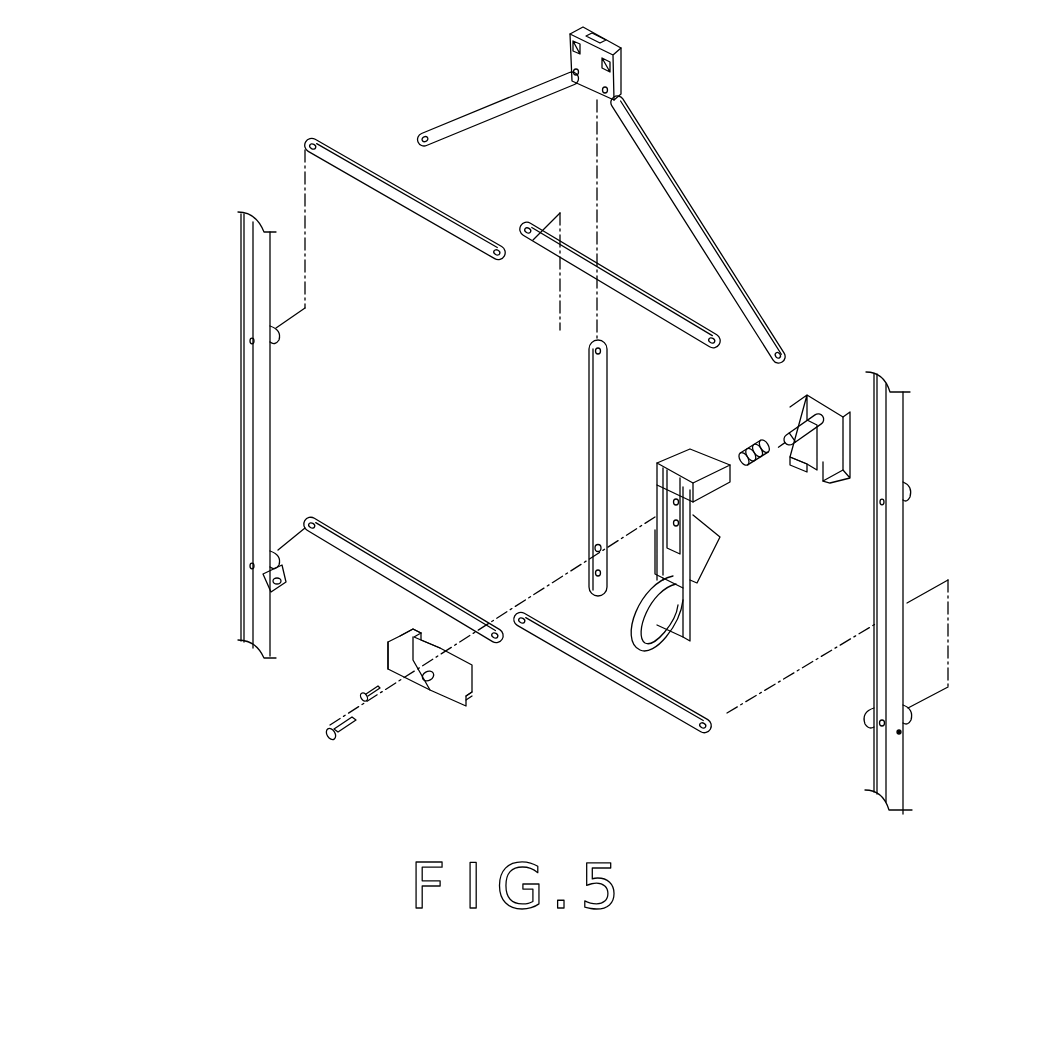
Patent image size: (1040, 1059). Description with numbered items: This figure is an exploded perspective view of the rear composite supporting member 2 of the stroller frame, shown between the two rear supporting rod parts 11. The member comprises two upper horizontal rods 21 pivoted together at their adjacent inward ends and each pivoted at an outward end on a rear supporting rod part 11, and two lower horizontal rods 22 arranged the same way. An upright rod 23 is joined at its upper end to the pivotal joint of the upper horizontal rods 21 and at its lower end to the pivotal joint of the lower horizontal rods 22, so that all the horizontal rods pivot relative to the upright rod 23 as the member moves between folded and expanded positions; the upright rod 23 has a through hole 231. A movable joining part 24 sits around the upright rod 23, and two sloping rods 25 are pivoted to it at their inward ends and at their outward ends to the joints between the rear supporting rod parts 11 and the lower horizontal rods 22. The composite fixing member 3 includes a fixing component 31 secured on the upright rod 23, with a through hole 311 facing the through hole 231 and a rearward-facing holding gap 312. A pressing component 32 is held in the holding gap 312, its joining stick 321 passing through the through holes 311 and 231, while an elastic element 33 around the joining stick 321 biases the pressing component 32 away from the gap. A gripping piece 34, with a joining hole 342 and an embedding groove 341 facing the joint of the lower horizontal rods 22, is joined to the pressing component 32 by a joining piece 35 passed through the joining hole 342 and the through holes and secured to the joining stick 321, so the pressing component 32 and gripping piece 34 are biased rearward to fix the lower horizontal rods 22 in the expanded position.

The rear composite supporting member 2 is at (720, 147).
The composite fixing member 3 is at (716, 588).
The rear supporting rod part 11 is at (252, 419).
The upper horizontal rod 21 is at (416, 205).
The lower horizontal rod 22 is at (392, 566).
The upright rod 23 is at (590, 394).
The movable joining part 24 is at (615, 45).
The sloping rod 25 is at (490, 117).
The fixing component 31 is at (698, 462).
The pressing component 32 is at (822, 402).
The elastic element 33 is at (750, 450).
The gripping piece 34 is at (442, 690).
The joining piece 35 is at (360, 688).
The through hole 231 is at (593, 551).
The through hole 311 is at (672, 503).
The holding gap 312 is at (715, 518).
The joining stick 321 is at (806, 476).
The embedding groove 341 is at (475, 695).
The joining hole 342 is at (416, 653).